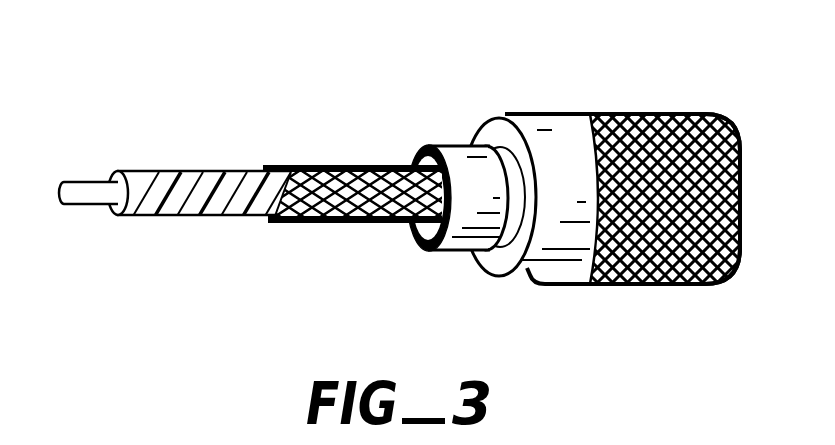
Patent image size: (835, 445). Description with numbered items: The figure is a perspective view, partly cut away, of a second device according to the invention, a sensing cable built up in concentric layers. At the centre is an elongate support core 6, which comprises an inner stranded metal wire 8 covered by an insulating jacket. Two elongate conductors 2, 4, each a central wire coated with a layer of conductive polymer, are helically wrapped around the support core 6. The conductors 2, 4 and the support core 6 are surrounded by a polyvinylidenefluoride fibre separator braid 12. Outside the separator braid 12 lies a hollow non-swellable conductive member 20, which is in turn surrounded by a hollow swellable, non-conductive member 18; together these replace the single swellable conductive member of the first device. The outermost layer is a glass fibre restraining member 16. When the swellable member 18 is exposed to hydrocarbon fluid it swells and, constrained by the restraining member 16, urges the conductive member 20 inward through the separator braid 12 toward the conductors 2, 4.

The elongate conductor 2 is at (190, 174).
The elongate conductor 4 is at (238, 194).
The central elongate support core 6 is at (120, 215).
The inner stranded metal wire 8 is at (93, 183).
The separator braid 12 is at (350, 225).
The restraining member 16 is at (640, 288).
The hollow swellable non-conductive member 18 is at (567, 153).
The hollow non-swellable conductive member 20 is at (461, 152).